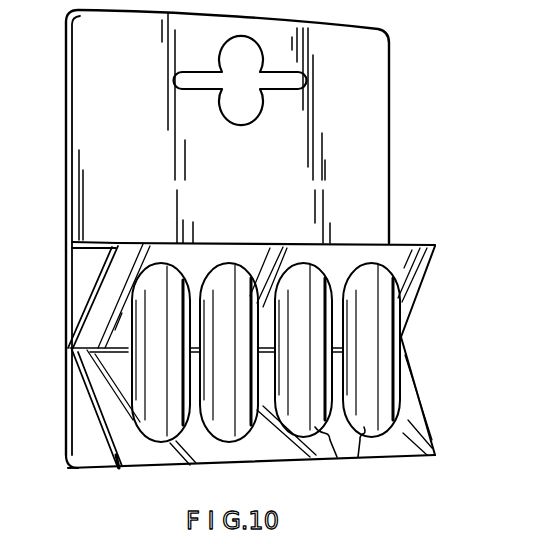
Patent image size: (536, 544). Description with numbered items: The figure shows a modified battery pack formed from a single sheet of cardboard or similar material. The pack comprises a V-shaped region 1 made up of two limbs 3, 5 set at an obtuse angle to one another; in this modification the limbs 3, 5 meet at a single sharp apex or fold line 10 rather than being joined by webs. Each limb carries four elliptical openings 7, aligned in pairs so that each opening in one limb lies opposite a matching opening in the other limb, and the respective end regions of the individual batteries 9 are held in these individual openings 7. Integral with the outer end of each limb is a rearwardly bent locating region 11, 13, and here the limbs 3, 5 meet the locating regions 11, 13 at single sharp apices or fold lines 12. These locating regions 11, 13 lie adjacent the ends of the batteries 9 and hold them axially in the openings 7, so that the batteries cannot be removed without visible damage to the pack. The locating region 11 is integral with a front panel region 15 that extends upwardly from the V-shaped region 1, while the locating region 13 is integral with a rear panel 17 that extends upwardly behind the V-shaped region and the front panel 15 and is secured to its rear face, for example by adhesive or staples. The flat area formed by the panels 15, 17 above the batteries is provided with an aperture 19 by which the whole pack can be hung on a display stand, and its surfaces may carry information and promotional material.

The V-shaped region 1 is at (425, 289).
The limb 3 is at (97, 292).
The limb 5 is at (88, 408).
The opening 7 is at (362, 460).
The battery 9 is at (310, 352).
The fold line 10 is at (72, 358).
The locating region 11 is at (100, 240).
The fold line 12 is at (412, 244).
The locating region 13 is at (90, 468).
The front panel region 15 is at (373, 145).
The rear panel 17 is at (66, 194).
The aperture 19 is at (242, 99).